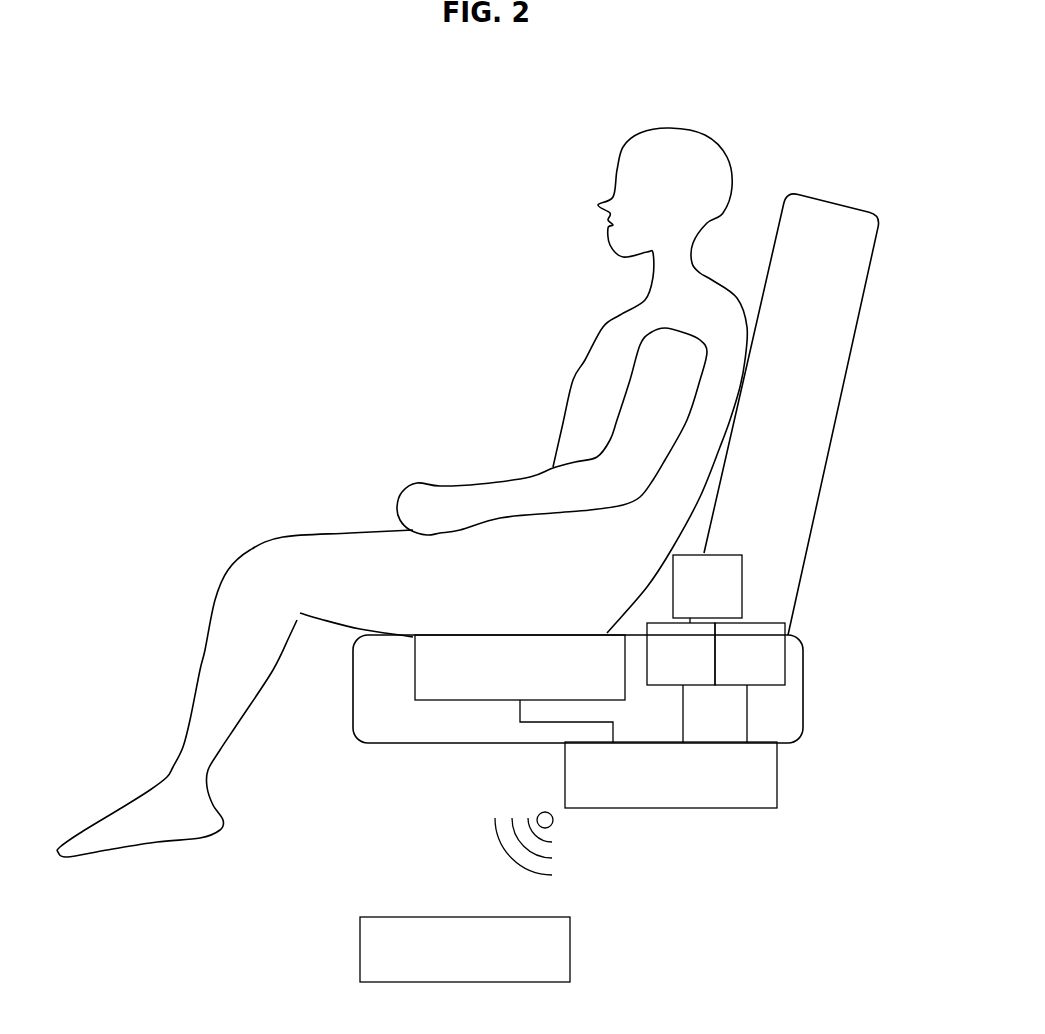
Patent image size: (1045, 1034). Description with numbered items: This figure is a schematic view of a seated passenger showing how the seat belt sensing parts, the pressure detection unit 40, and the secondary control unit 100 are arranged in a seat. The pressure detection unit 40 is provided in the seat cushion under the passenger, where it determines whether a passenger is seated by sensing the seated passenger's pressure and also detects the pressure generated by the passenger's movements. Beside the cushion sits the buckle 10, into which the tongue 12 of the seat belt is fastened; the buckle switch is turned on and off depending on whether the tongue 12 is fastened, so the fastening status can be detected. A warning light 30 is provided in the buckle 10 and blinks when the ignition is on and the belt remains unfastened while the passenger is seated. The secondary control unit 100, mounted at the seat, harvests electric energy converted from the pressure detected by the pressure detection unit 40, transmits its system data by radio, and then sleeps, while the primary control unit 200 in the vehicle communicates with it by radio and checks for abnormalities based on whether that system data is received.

The buckle 10 is at (660, 640).
The tongue 12 is at (735, 573).
The warning light 30 is at (778, 655).
The pressure detection unit 40 is at (420, 695).
The secondary control unit 100 is at (710, 808).
The primary control unit 200 is at (570, 950).